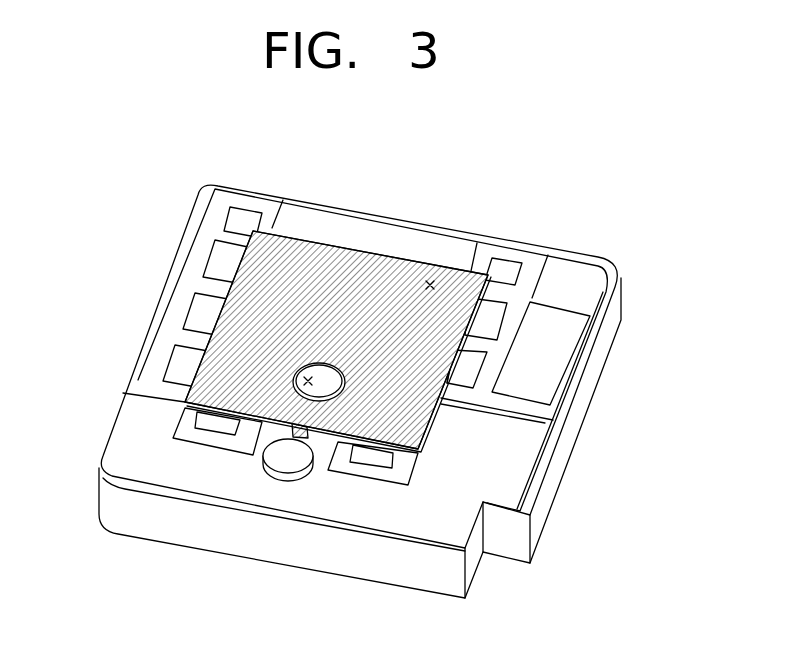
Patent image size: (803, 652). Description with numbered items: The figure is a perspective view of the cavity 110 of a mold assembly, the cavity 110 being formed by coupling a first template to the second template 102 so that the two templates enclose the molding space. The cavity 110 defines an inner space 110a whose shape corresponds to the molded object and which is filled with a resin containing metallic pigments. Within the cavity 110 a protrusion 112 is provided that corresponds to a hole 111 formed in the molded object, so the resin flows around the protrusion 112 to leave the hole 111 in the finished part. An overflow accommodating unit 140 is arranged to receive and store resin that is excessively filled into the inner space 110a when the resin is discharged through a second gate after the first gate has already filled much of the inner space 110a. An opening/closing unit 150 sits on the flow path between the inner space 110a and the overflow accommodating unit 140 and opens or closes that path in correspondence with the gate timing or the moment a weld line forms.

The second template 102 is at (587, 398).
The cavity 110 is at (397, 264).
The inner space 110a is at (432, 284).
The hole 111 is at (295, 380).
The protrusion 112 is at (312, 376).
The overflow accommodating unit 140 is at (288, 468).
The opening/closing unit 150 is at (293, 432).